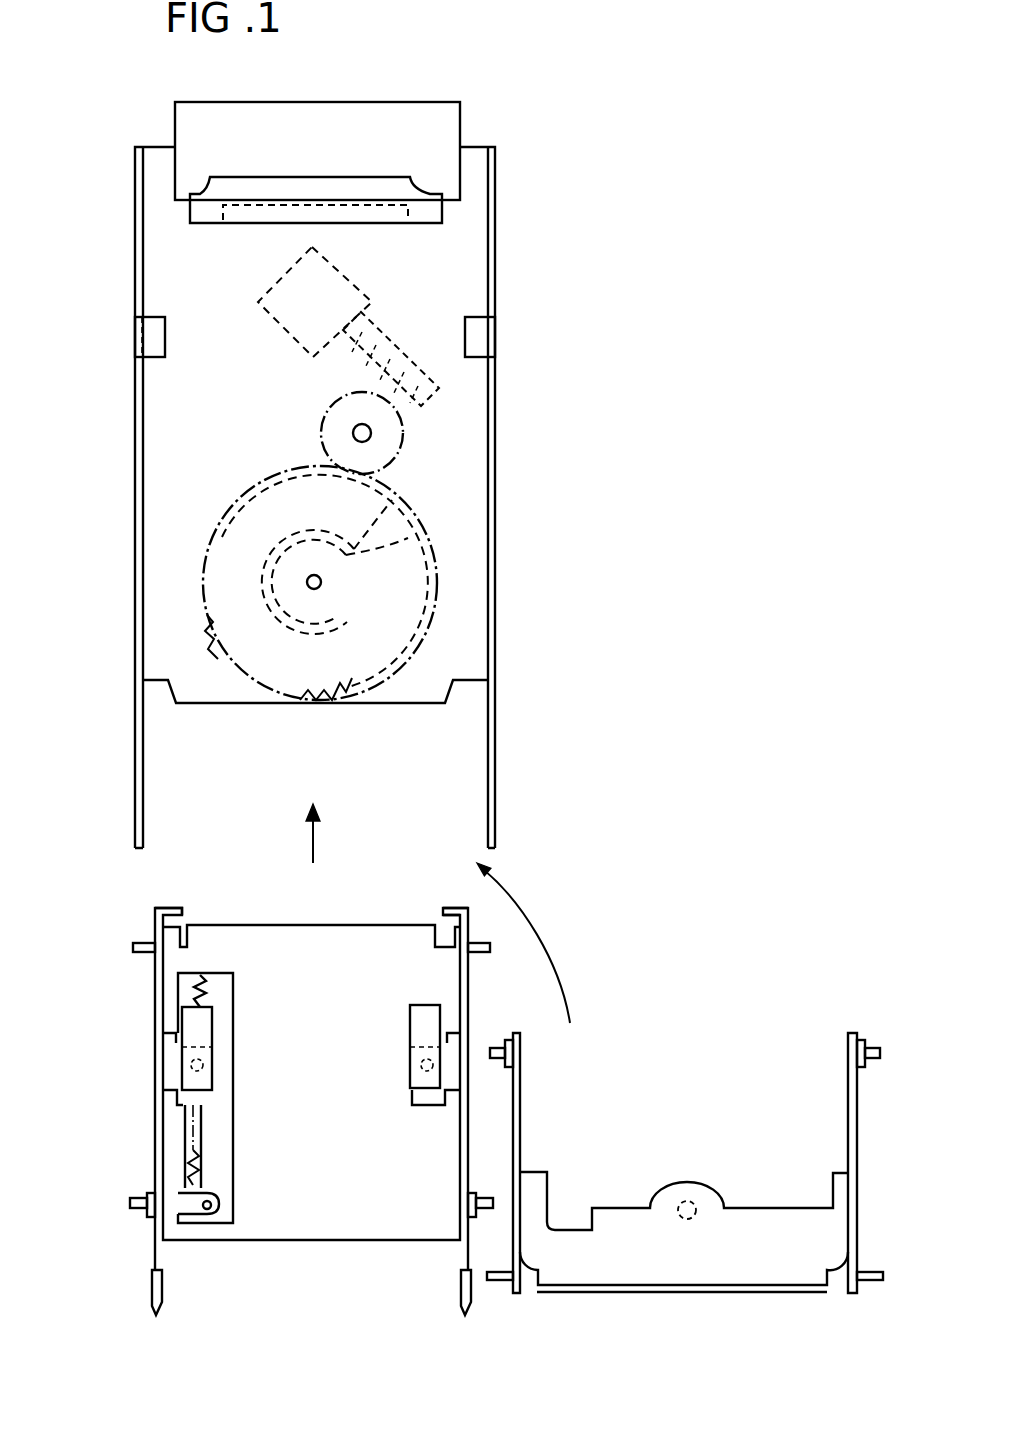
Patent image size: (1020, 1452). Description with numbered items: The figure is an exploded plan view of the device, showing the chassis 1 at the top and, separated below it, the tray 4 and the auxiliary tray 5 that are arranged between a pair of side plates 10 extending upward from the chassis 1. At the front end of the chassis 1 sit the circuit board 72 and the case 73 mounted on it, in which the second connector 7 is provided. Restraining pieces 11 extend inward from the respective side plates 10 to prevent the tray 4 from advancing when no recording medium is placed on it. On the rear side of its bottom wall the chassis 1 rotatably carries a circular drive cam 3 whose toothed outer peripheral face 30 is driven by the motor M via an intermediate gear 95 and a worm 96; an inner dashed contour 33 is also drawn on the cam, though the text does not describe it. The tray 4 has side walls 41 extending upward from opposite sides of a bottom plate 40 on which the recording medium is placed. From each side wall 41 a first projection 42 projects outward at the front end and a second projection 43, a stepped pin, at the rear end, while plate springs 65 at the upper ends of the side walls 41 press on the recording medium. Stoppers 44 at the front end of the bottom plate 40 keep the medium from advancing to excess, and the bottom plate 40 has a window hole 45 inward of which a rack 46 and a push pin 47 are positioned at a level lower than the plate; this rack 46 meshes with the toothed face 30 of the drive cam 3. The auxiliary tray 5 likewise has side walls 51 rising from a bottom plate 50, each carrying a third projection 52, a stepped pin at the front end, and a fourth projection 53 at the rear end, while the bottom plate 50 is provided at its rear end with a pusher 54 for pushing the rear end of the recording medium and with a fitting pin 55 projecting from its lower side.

The chassis 1 is at (503, 277).
The drive cam 3 is at (397, 497).
The tray 4 is at (298, 1062).
The auxiliary tray 5 is at (685, 1175).
The second connector 7 is at (282, 217).
The side plate 10 is at (135, 562).
The restraining piece 11 is at (478, 347).
The toothed outer peripheral face 30 is at (250, 487).
The ring 33 is at (397, 530).
The bottom plate 40 is at (348, 940).
The side wall 41 is at (155, 1033).
The first projection 42 is at (134, 942).
The second projection 43 is at (130, 1208).
The stopper 44 is at (173, 908).
The window hole 45 is at (230, 1046).
The rack 46 is at (202, 1160).
The push pin 47 is at (214, 1210).
The bottom plate 50 is at (617, 1223).
The side wall 51 is at (520, 1138).
The third projection 52 is at (513, 1088).
The fourth projection 53 is at (493, 1283).
The pusher 54 is at (630, 1293).
The fitting pin 55 is at (703, 1198).
The plate spring 65 is at (412, 1020).
The circuit board 72 is at (410, 122).
The case 73 is at (402, 185).
The intermediate gear 95 is at (403, 457).
The worm 96 is at (430, 405).
The motor M is at (263, 295).